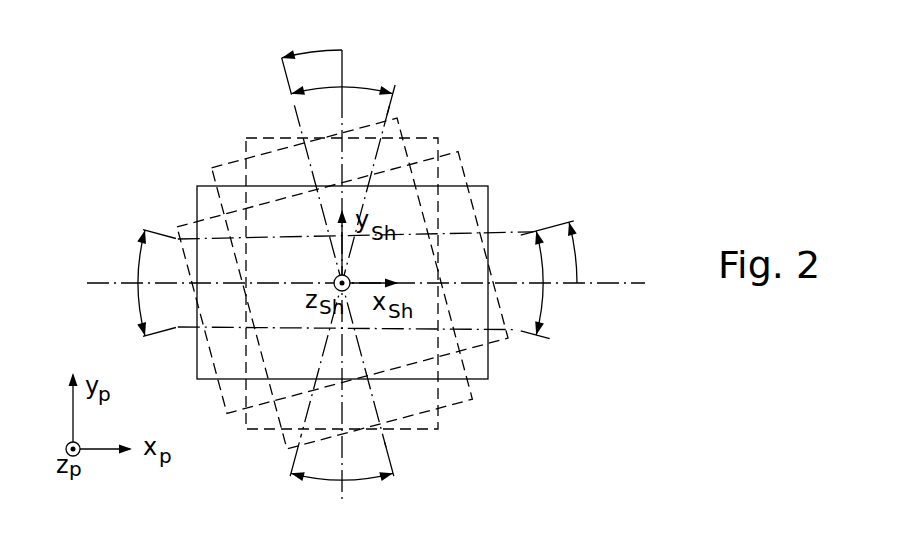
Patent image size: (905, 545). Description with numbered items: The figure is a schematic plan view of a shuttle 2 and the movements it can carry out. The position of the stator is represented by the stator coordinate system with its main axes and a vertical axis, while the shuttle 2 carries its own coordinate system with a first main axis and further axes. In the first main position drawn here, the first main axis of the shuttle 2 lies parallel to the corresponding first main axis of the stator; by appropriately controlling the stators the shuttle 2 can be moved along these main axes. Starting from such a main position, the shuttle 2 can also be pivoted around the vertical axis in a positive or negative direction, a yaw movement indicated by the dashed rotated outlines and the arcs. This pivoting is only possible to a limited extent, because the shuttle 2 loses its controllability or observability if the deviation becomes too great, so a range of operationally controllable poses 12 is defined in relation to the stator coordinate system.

The shuttle 2 is at (488, 202).
The range of operationally controllable poses 12 is at (357, 85).